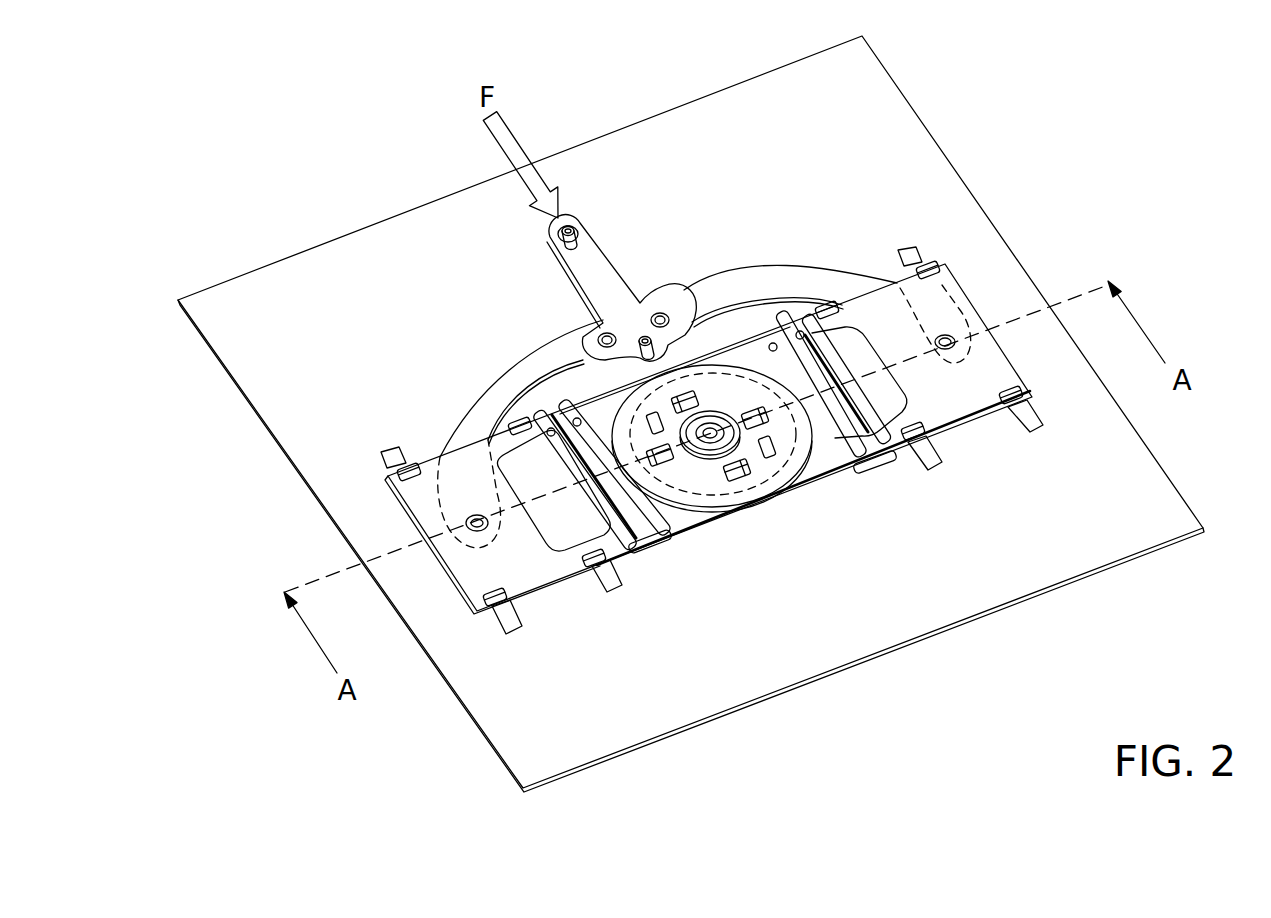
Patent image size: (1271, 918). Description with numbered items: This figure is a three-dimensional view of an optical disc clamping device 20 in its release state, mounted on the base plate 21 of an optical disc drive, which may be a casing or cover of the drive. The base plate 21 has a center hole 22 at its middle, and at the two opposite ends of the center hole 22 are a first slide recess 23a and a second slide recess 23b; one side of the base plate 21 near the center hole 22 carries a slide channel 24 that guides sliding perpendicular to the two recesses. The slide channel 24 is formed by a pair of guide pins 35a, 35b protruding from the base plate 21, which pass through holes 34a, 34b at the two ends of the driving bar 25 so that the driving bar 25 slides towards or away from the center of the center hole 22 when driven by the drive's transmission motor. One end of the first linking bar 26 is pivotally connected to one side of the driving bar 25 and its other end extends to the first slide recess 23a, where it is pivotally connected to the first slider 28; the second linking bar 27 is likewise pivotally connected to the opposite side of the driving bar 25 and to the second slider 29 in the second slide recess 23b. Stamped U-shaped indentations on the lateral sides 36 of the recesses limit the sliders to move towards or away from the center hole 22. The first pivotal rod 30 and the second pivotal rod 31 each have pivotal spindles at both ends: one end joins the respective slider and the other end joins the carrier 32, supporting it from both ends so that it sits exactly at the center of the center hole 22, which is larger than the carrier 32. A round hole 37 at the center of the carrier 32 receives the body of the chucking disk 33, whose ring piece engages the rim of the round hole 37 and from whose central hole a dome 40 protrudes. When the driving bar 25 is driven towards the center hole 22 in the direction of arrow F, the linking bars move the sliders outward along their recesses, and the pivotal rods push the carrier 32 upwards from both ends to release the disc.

The optical disc clamping device 20 is at (786, 180).
The base plate 21 is at (318, 247).
The center hole 22 is at (777, 514).
The first slide recess 23a is at (928, 254).
The second slide recess 23b is at (375, 461).
The slide channel 24 is at (571, 212).
The driving bar 25 is at (568, 284).
The first linking bar 26 is at (750, 262).
The second linking bar 27 is at (462, 385).
The first slider 28 is at (965, 425).
The second slider 29 is at (545, 582).
The first pivotal rod 30 is at (890, 460).
The second pivotal rod 31 is at (650, 560).
The carrier 32 is at (674, 532).
The chucking disk 33 is at (852, 474).
The hole 34a is at (640, 307).
The hole 34b is at (688, 300).
The guide pin 35a is at (575, 226).
The guide pin 35b is at (642, 334).
The lateral side 36 is at (503, 615).
The round hole 37 is at (823, 466).
The dome 40 is at (706, 440).